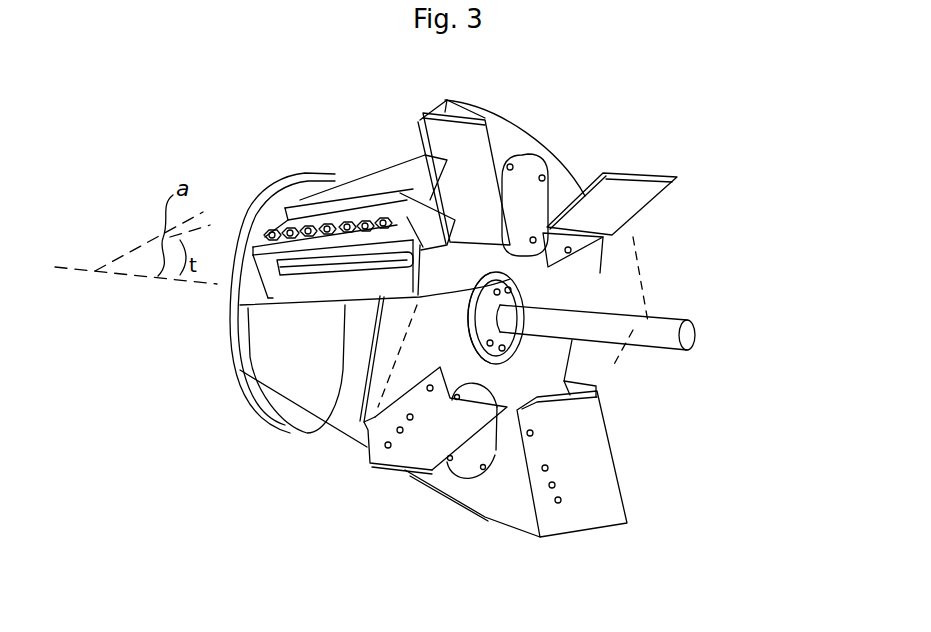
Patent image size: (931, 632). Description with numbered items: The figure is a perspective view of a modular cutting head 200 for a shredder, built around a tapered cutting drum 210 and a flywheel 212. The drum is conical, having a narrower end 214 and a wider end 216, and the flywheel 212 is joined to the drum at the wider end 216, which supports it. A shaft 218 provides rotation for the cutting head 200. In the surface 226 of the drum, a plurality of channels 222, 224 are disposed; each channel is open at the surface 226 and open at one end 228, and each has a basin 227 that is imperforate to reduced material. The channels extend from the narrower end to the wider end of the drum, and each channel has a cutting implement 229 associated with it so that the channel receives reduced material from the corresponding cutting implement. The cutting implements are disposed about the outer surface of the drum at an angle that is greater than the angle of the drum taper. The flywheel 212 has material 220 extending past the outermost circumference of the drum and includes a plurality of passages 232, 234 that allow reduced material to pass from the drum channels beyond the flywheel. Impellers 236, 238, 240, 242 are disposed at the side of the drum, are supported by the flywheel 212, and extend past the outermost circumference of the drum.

The modular cutting head 200 is at (132, 232).
The tapered cutting drum 210 is at (278, 355).
The flywheel 212 is at (502, 132).
The narrower end 214 is at (248, 428).
The wider end 216 is at (405, 473).
The shaft 218 is at (663, 348).
The material 220 is at (457, 110).
The channel 222 is at (248, 308).
The channel 224 is at (567, 365).
The surface 226 is at (341, 308).
The basin 227 is at (350, 285).
The one end 228 is at (423, 267).
The cutting implement 229 is at (348, 288).
The passage 232 is at (510, 279).
The passage 234 is at (643, 292).
The impeller 236 is at (487, 190).
The impeller 238 is at (677, 177).
The impeller 240 is at (607, 510).
The impeller 242 is at (390, 457).